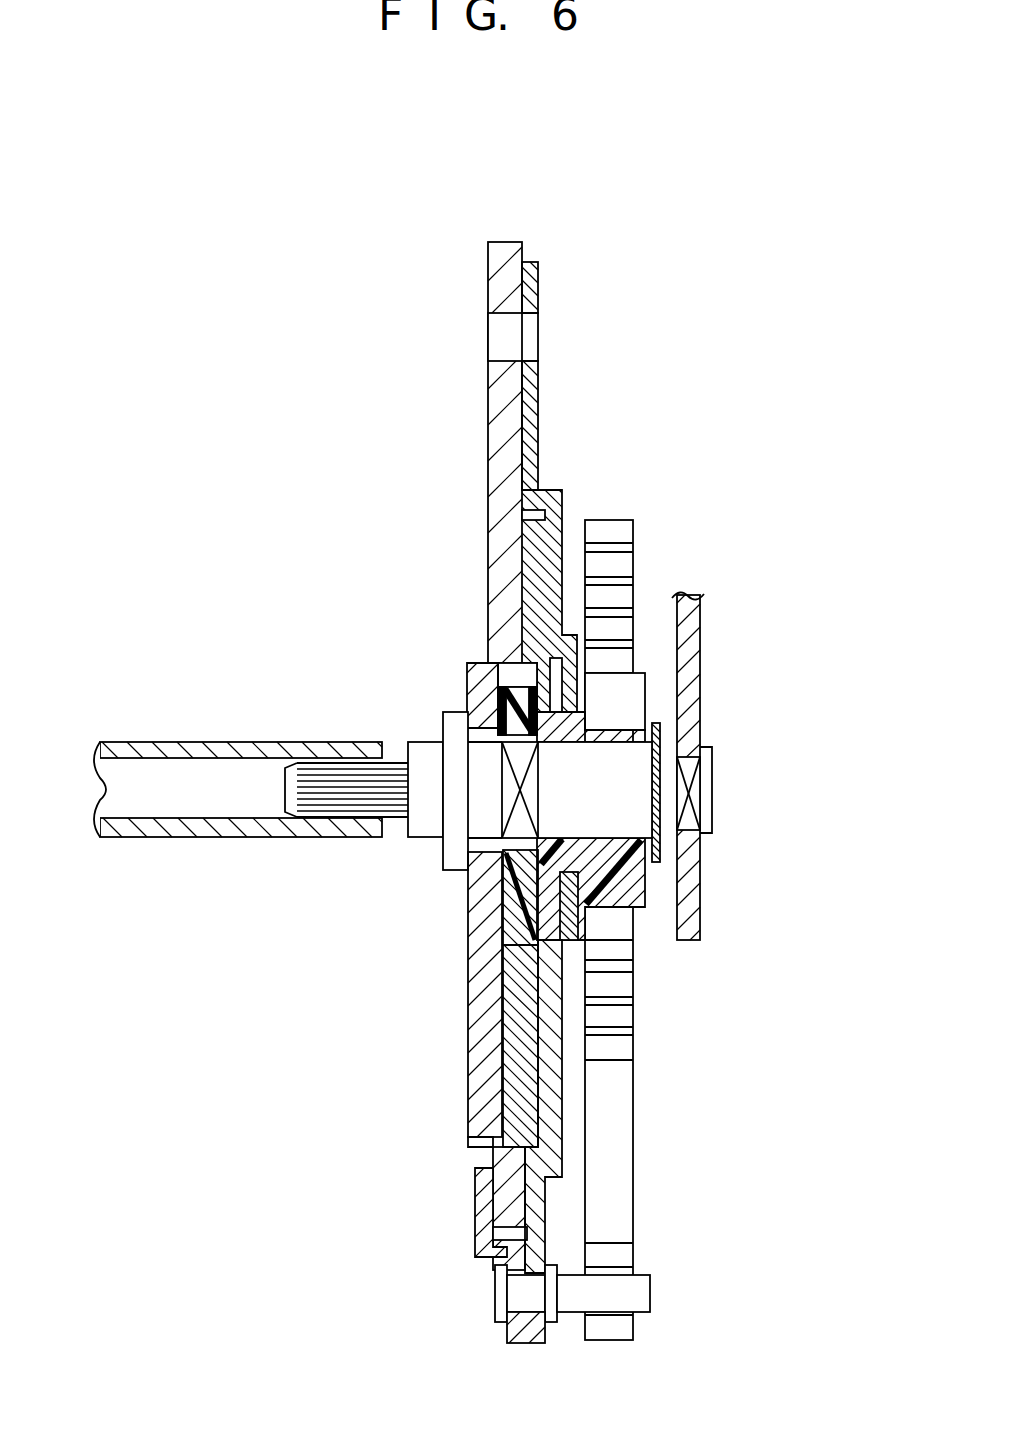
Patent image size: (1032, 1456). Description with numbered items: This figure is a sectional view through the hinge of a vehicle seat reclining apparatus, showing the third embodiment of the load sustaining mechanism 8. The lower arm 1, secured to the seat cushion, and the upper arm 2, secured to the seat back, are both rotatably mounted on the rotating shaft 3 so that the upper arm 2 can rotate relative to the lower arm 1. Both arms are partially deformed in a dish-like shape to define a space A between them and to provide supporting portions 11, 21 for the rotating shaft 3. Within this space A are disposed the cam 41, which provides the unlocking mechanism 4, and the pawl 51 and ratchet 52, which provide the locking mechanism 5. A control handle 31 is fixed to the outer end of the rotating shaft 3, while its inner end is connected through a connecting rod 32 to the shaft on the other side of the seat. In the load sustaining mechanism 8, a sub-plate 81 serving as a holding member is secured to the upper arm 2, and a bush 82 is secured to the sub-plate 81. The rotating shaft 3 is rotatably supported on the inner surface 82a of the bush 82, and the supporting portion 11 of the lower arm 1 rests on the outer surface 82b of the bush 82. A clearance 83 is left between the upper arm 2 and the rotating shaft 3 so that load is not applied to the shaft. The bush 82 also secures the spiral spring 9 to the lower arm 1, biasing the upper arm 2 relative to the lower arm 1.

The lower arm 1 is at (640, 1141).
The supporting portion 11 is at (548, 1107).
The upper arm 2 is at (497, 282).
The supporting portion 21 is at (470, 665).
The rotating shaft 3 is at (560, 805).
The control handle 31 is at (690, 630).
The connecting rod 32 is at (222, 745).
The unlocking mechanism 4 is at (448, 933).
The cam 41 is at (500, 870).
The locking mechanism 5 is at (418, 1060).
The pawl 51 is at (527, 1013).
The ratchet 52 is at (500, 1140).
The load sustaining mechanism 8 is at (533, 601).
The sub-plate 81 is at (545, 398).
The bush 82 is at (618, 873).
The inner surface 82a is at (600, 747).
The outer surface 82b is at (600, 908).
The clearance 83 is at (467, 702).
The spiral spring 9 is at (618, 1013).
The space A is at (512, 672).